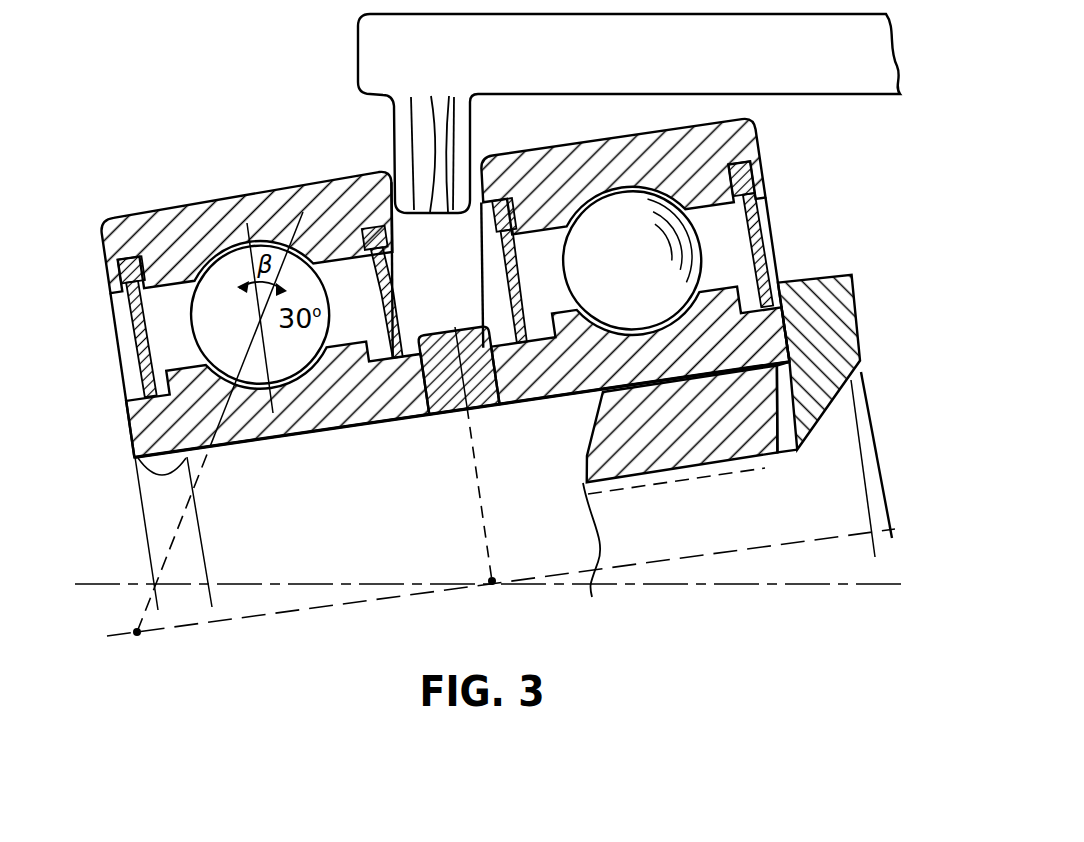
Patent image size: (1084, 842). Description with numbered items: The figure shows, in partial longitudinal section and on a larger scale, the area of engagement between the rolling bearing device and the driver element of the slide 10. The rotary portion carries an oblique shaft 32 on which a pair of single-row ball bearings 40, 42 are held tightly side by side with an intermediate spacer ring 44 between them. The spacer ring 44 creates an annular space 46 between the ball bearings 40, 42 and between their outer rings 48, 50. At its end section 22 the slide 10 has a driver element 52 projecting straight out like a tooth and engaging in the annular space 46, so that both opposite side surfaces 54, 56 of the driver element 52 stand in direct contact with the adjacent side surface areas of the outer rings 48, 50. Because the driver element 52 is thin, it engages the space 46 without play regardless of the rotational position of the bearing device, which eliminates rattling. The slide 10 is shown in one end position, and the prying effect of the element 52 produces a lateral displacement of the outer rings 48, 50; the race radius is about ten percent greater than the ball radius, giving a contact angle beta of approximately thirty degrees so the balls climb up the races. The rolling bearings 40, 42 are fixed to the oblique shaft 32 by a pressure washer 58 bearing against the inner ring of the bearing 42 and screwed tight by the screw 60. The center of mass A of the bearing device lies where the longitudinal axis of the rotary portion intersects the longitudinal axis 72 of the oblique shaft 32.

The slide 10 is at (831, 96).
The end section 22 is at (604, 59).
The oblique shaft 32 is at (618, 463).
The ball bearing 40 is at (125, 346).
The ball bearing 42 is at (774, 245).
The spacer ring 44 is at (443, 402).
The annular space 46 is at (439, 221).
The outer ring 48 is at (208, 228).
The outer ring 50 is at (732, 148).
The driver element 52 is at (437, 140).
The side surface 54 is at (406, 137).
The side surface 56 is at (465, 137).
The pressure washer 58 is at (831, 335).
The screw 60 is at (838, 494).
The longitudinal axis of the oblique shaft 72 is at (743, 545).
The center of mass A is at (492, 581).